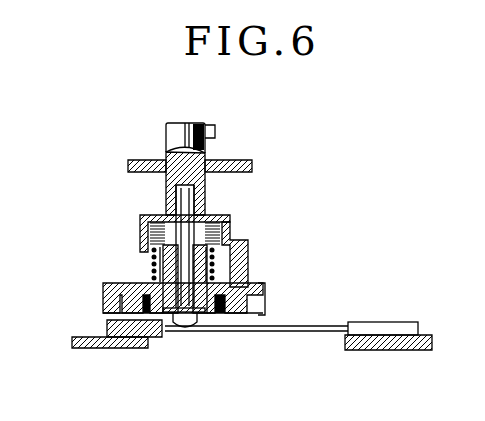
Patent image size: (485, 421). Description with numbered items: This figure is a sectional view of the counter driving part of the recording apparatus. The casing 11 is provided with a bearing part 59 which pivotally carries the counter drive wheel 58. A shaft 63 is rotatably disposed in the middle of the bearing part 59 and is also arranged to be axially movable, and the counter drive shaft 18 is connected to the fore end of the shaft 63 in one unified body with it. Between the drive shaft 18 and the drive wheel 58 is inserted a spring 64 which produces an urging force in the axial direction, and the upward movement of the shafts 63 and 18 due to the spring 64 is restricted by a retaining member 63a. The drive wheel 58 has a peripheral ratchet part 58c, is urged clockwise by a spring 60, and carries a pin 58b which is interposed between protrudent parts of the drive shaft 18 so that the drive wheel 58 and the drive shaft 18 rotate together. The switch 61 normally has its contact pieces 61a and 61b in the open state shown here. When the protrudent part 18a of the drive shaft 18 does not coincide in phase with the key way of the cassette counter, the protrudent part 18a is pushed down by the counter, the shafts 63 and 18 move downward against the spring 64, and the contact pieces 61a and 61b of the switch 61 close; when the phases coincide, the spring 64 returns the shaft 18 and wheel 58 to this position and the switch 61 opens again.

The casing 11 is at (245, 161).
The counter drive shaft 18 is at (168, 143).
The protrudent part 18a is at (215, 131).
The counter drive wheel 58 is at (128, 283).
The pin 58b is at (248, 266).
The ratchet part 58c is at (265, 296).
The bearing part 59 is at (150, 262).
The spring 60 is at (110, 326).
The switch 61 is at (380, 322).
The contact piece 61a is at (305, 333).
The contact piece 61b is at (256, 333).
The shaft 63 is at (195, 201).
The retaining member 63a is at (200, 332).
The spring 64 is at (219, 233).